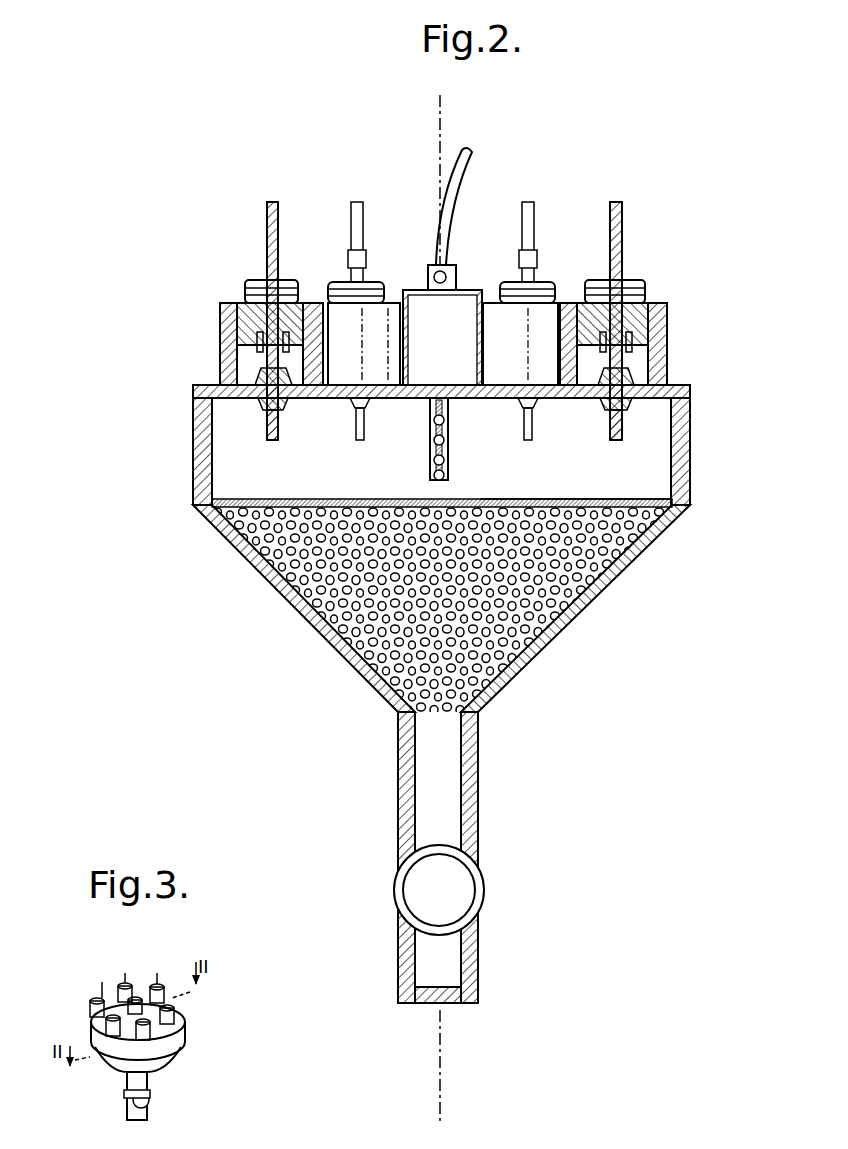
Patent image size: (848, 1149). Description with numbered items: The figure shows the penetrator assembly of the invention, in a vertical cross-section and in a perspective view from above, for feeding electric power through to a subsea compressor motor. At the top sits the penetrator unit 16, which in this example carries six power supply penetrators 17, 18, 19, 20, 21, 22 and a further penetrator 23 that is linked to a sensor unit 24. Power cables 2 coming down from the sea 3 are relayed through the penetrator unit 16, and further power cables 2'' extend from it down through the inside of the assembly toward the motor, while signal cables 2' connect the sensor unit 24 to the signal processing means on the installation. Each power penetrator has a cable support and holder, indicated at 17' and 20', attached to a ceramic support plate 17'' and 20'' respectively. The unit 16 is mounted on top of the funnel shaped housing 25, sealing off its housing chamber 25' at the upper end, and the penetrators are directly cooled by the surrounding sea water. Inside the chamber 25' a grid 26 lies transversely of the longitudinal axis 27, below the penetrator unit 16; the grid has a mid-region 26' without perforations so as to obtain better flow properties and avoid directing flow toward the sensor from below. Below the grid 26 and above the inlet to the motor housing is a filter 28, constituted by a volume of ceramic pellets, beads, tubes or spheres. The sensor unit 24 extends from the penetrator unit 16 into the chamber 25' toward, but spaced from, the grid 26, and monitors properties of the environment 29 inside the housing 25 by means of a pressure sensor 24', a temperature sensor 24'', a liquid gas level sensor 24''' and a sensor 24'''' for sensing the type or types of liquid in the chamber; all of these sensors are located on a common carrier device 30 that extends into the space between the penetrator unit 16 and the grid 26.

In FIG. 2, the power cable 2 is at (442, 305).
In FIG. 2, the signal cable 2' is at (470, 195).
In FIG. 2, the further power cable 2'' is at (444, 442).
In FIG. 2, the sea 3 is at (425, 117).
In FIG. 2, the penetrator unit 16 is at (752, 195).
In FIG. 2, the power supply penetrator 17 is at (247, 324).
In FIG. 3, the power supply penetrator 17 is at (118, 1073).
In FIG. 2, the cable support and holder 17' is at (226, 371).
In FIG. 2, the ceramic support plate 17'' is at (214, 410).
In FIG. 2, the power supply penetrator 18 is at (333, 292).
In FIG. 3, the power supply penetrator 18 is at (100, 1022).
In FIG. 2, the power supply penetrator 19 is at (557, 292).
In FIG. 3, the power supply penetrator 19 is at (118, 988).
In FIG. 2, the power supply penetrator 20 is at (633, 308).
In FIG. 3, the power supply penetrator 20 is at (152, 964).
In FIG. 2, the cable support and holder 20' is at (667, 367).
In FIG. 2, the ceramic support plate 20'' is at (673, 411).
In FIG. 3, the power supply penetrator 21 is at (176, 1030).
In FIG. 3, the power supply penetrator 22 is at (152, 1060).
In FIG. 2, the penetrator 23 is at (465, 286).
In FIG. 3, the penetrator 23 is at (98, 1008).
In FIG. 2, the sensor unit 24 is at (403, 450).
In FIG. 2, the pressure sensor 24' is at (413, 428).
In FIG. 2, the temperature sensor 24'' is at (480, 442).
In FIG. 2, the liquid gas level sensor 24''' is at (406, 464).
In FIG. 2, the liquid type sensor 24'''' is at (486, 480).
In FIG. 2, the funnel shaped housing 25 is at (496, 701).
In FIG. 2, the housing chamber 25' is at (409, 448).
In FIG. 2, the grid 26 is at (409, 487).
In FIG. 2, the mid-region of the grid 26' is at (576, 485).
In FIG. 2, the longitudinal axis 27 is at (440, 162).
In FIG. 2, the filter 28 is at (388, 672).
In FIG. 2, the environment 29 is at (512, 632).
In FIG. 2, the common carrier device 30 is at (448, 410).